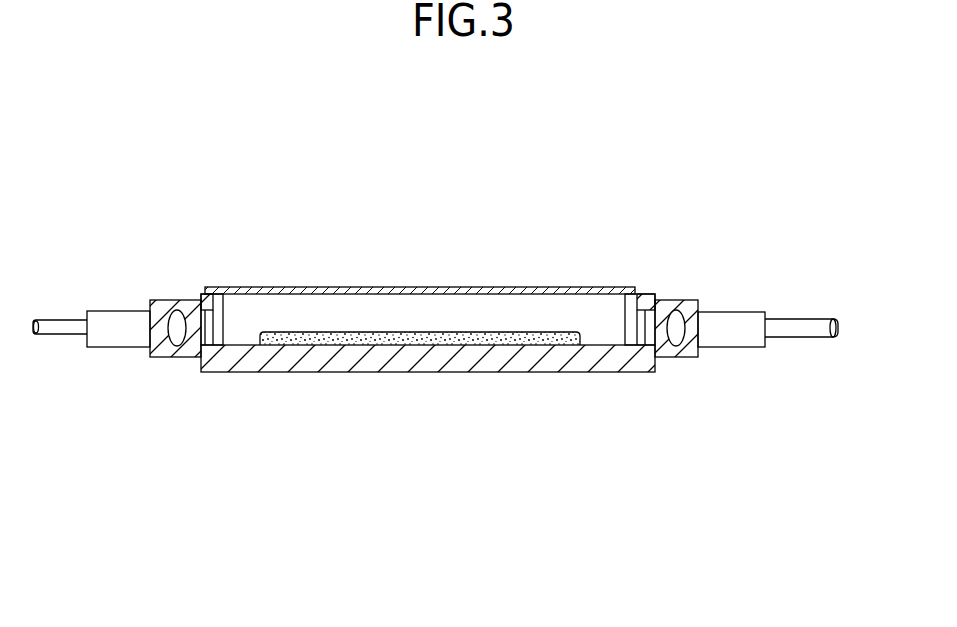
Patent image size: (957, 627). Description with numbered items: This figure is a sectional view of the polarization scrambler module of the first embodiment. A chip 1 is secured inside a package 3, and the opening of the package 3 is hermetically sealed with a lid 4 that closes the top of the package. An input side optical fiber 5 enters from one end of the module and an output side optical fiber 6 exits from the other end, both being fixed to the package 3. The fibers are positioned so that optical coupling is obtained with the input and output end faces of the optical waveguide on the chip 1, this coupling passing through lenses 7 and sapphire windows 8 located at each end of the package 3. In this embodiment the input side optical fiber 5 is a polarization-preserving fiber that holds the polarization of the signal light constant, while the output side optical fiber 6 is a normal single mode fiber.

The chip 1 is at (333, 330).
The package 3 is at (380, 360).
The lid 4 is at (437, 287).
The input side optical fiber 5 is at (62, 333).
The output side optical fiber 6 is at (793, 337).
The lens 7 is at (177, 317).
The sapphire window 8 is at (204, 317).